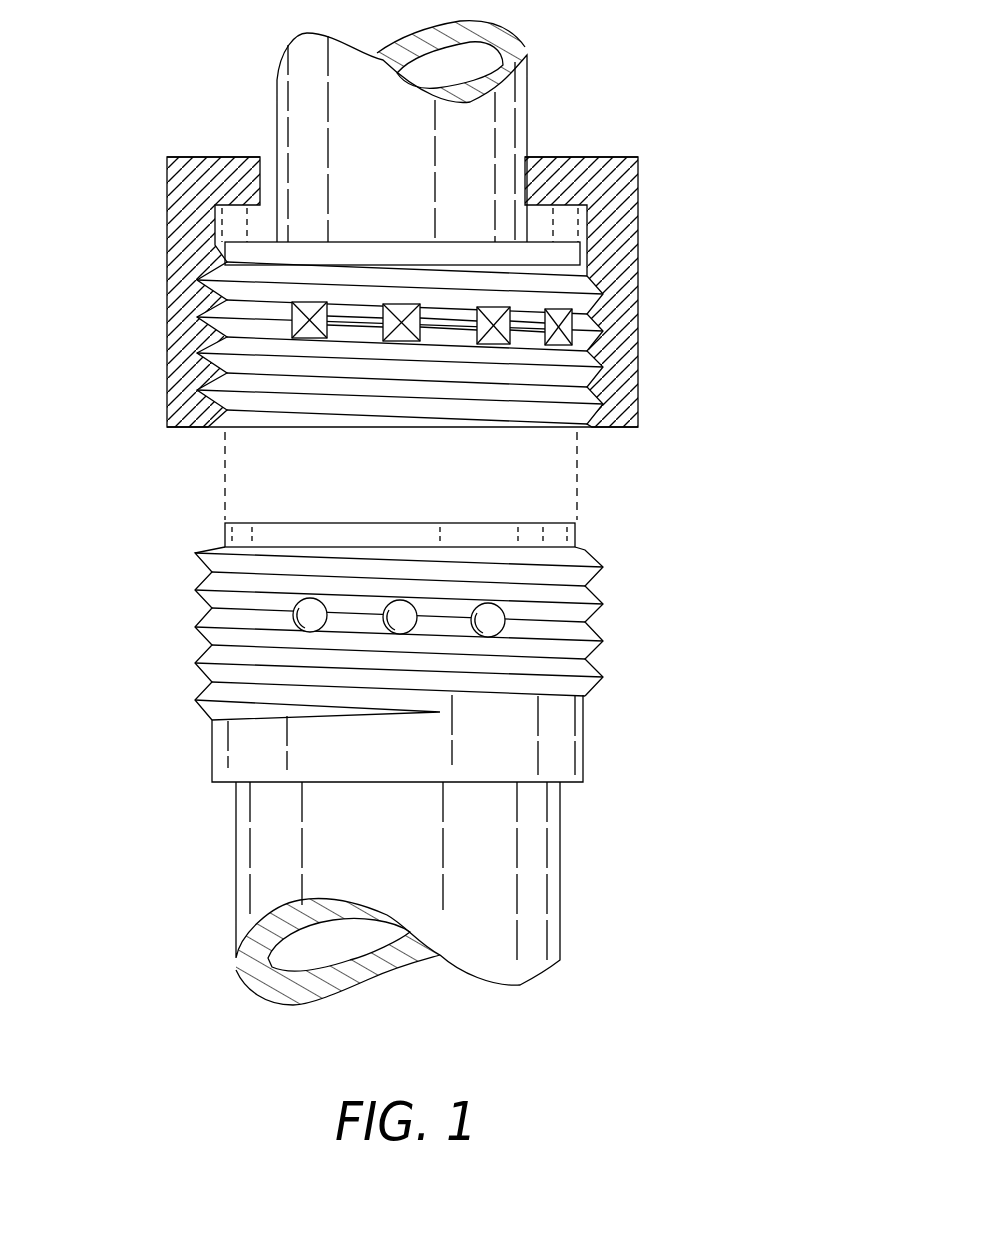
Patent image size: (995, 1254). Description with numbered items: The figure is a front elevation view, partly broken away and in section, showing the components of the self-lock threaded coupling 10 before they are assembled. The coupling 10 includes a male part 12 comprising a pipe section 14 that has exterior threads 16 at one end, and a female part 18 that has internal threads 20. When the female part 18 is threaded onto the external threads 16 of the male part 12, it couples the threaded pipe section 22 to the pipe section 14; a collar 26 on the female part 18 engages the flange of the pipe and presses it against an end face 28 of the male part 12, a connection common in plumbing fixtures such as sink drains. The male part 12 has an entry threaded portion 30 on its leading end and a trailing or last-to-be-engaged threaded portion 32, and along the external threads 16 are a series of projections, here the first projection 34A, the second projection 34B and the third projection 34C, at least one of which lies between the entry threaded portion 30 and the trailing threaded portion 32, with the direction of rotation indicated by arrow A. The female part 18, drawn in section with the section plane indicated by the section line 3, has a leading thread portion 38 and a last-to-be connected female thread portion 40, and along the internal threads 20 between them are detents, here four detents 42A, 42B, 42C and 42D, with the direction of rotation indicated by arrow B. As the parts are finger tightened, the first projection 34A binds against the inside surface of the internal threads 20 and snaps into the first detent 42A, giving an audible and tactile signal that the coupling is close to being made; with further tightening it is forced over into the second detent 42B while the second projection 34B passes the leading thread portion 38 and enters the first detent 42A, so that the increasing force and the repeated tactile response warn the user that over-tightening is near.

The coupling 10 is at (821, 131).
The male part 12 is at (583, 758).
The pipe section 14 is at (235, 872).
The exterior threads 16 is at (603, 568).
The female part 18 is at (640, 220).
The internal threads 20 is at (222, 258).
The threaded pipe section 22 is at (530, 108).
The collar 26 is at (607, 157).
The end face 28 is at (535, 522).
The entry threaded portion 30 is at (207, 580).
The trailing threaded portion 32 is at (196, 705).
The first projection 34A is at (306, 618).
The second projection 34B is at (405, 610).
The third projection 34C is at (493, 628).
The leading thread portion 38 is at (238, 430).
The last-to-be connected female thread portion 40 is at (222, 376).
The first detent 42A is at (566, 346).
The second detent 42B is at (495, 342).
The third detent 42C is at (400, 332).
The fourth detent 42D is at (306, 332).
The direction of rotation arrow A is at (460, 833).
The direction of rotation arrow B is at (167, 262).
The section line 3 is at (140, 318).